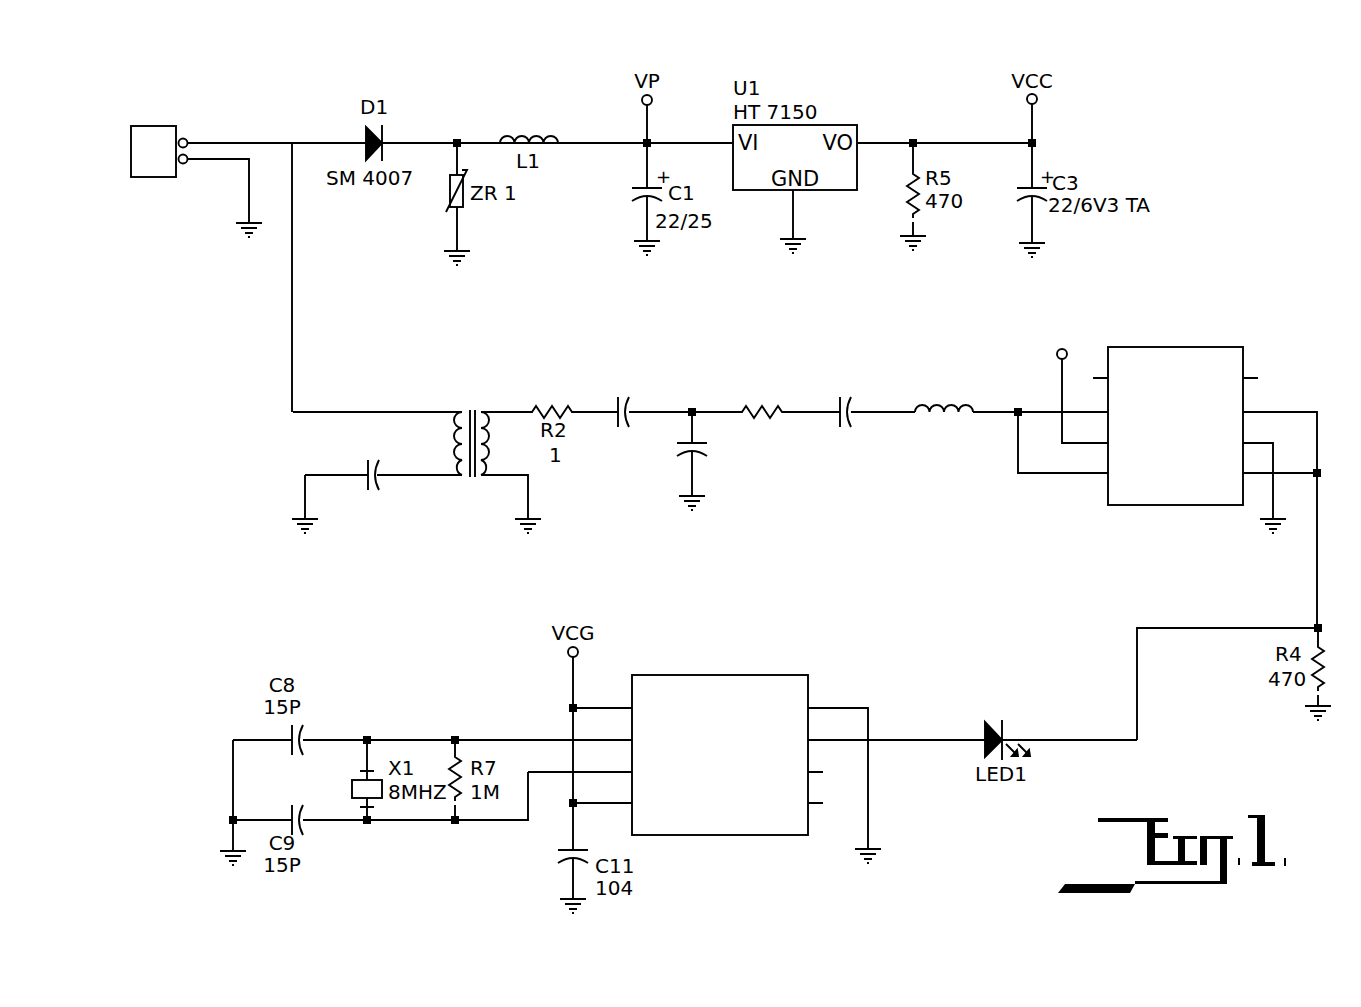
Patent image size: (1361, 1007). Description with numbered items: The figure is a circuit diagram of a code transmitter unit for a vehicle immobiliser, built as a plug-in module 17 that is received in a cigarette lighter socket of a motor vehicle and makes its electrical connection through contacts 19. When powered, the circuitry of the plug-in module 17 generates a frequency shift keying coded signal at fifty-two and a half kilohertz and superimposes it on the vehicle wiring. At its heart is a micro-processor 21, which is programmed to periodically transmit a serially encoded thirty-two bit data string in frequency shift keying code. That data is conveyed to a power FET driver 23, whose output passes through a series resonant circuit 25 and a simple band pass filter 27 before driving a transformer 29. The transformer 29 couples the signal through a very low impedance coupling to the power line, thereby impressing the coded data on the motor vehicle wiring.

The plug-in module 17 is at (224, 566).
The contacts 19 is at (132, 152).
The micro-processor 21 is at (760, 675).
The power FET driver 23 is at (1191, 347).
The series resonant circuit 25 is at (947, 392).
The band pass filter 27 is at (696, 424).
The transformer 29 is at (468, 480).